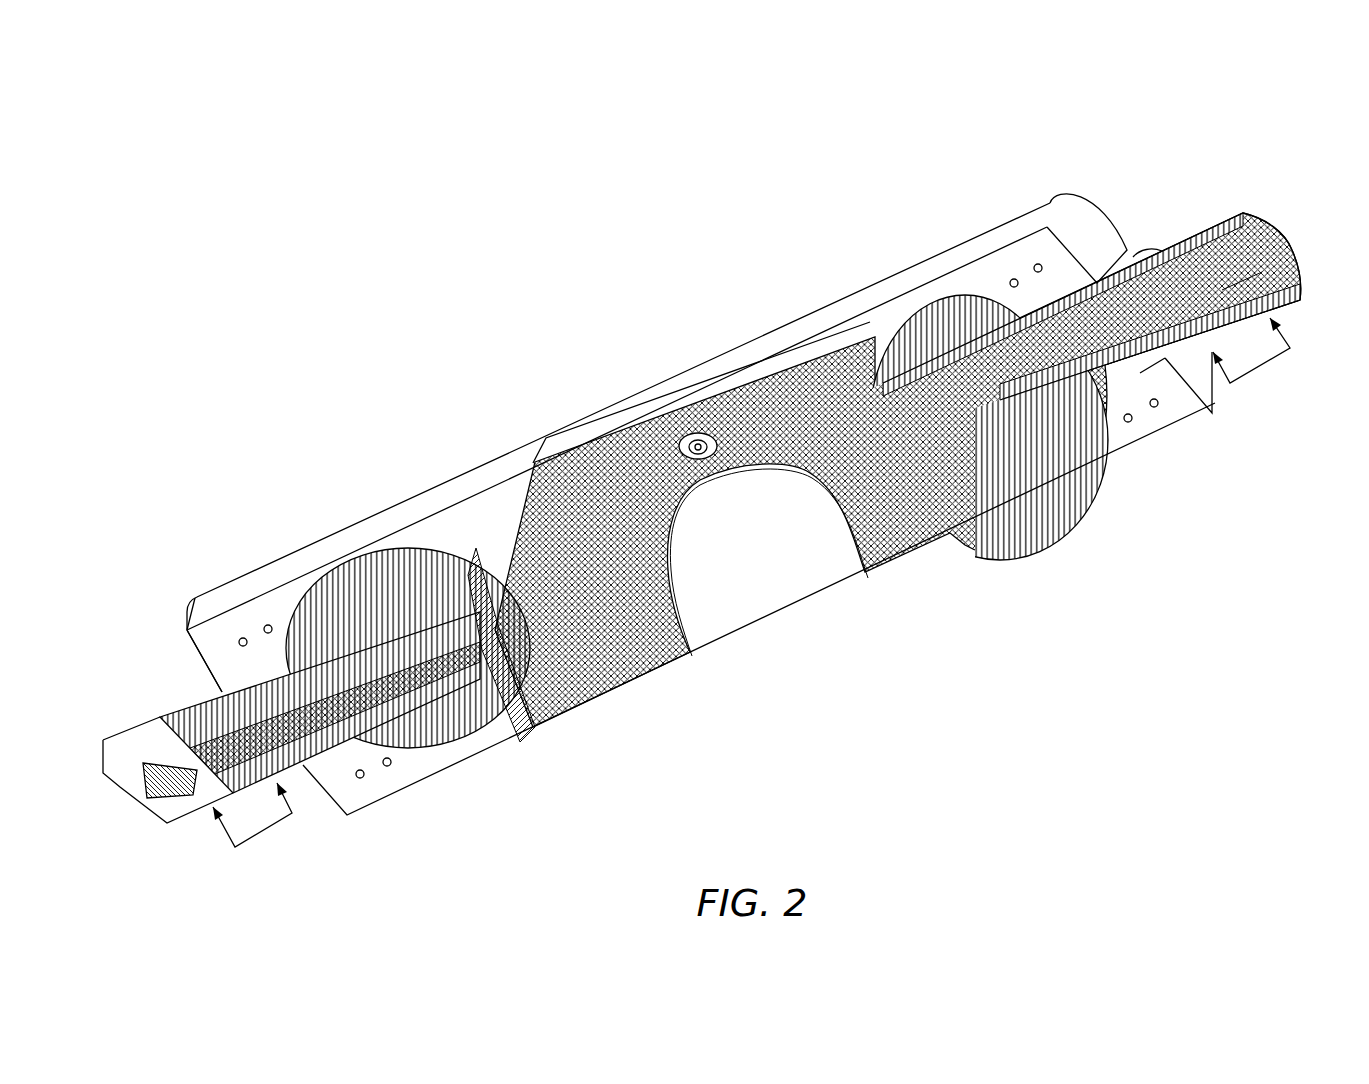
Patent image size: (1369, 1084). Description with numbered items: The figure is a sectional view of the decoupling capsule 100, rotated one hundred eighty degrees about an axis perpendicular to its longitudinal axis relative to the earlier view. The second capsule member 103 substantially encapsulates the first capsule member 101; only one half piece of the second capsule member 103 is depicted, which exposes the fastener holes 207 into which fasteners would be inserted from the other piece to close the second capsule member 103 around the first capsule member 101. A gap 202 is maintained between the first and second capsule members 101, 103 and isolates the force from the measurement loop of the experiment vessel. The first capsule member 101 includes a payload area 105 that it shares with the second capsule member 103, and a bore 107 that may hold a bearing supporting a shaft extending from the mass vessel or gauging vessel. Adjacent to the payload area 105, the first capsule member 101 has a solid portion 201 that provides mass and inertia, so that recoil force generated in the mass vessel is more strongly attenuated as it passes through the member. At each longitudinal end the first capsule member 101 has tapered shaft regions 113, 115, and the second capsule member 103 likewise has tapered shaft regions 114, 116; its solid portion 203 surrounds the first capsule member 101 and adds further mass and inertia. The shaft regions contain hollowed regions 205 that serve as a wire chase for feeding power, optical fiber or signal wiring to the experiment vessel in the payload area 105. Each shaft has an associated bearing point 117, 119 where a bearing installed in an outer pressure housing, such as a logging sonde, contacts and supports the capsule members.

The decoupling capsule 100 is at (254, 360).
The first capsule member 101 is at (750, 427).
The second capsule member 103 is at (447, 497).
The payload area 105 is at (750, 563).
The bore 107 is at (650, 440).
The tapered shaft region 113 is at (1207, 232).
The tapered shaft region 114 is at (1148, 258).
The tapered shaft region 115 is at (200, 695).
The tapered shaft region 116 is at (147, 723).
The bearing point 117 is at (1262, 365).
The bearing point 119 is at (268, 833).
The solid portion 201 is at (347, 597).
The gap 202 is at (583, 440).
The solid portion 203 is at (258, 602).
The hollowed region 205 is at (177, 760).
The fastener holes 207 is at (263, 628).